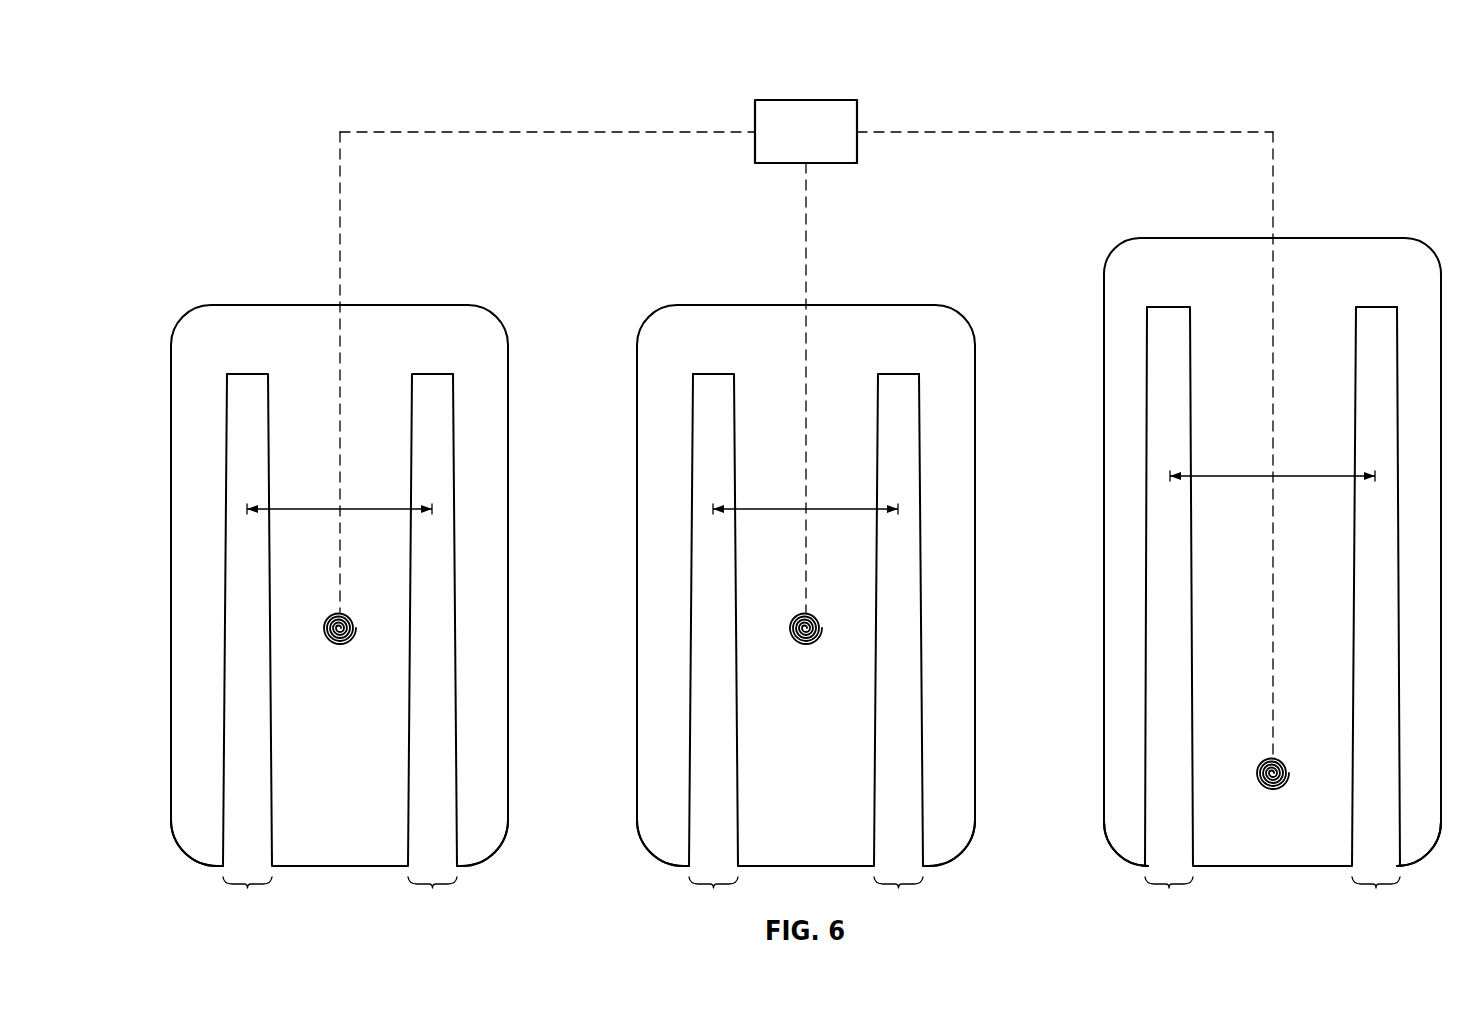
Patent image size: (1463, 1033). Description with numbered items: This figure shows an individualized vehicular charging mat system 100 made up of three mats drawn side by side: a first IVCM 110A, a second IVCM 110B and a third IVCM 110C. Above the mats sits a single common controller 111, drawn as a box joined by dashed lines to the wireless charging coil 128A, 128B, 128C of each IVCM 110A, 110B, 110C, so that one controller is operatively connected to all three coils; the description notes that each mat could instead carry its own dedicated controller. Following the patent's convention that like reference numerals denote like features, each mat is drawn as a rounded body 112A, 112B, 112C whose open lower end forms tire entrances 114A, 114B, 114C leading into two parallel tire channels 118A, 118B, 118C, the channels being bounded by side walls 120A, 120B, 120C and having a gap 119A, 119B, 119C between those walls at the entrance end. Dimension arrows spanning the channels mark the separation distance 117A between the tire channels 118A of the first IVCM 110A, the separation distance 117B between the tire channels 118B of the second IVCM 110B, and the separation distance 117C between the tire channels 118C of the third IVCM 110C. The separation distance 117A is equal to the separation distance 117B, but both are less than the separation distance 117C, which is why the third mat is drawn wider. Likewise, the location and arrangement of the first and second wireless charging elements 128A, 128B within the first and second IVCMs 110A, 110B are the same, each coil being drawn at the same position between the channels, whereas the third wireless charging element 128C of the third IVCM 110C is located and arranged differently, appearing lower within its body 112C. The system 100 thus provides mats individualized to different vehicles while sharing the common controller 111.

The individualized vehicular charging mat system 100 is at (280, 86).
The common controller 111 is at (809, 100).
The first IVCM 110A is at (182, 286).
The housing of first module 112A is at (187, 414).
The distal end of arm of first module 114A is at (248, 843).
The separation distance 117A is at (361, 506).
The tire channels 118A is at (245, 433).
The gap of first module 119A is at (341, 895).
The hinge of first module 120A is at (227, 395).
The wireless charging coil 128A is at (326, 636).
The second IVCM 110B is at (648, 286).
The housing of second module 112B is at (653, 414).
The distal end of arm of second module 114B is at (715, 857).
The separation distance 117B is at (827, 506).
The tire channels 118B is at (711, 433).
The gap of second module 119B is at (807, 895).
The hinge of second module 120B is at (693, 395).
The wireless charging coil 128B is at (792, 636).
The third IVCM 110C is at (1127, 200).
The housing of third module 112C is at (1120, 390).
The distal end of arm of third module 114C is at (1165, 852).
The separation distance 117C is at (1296, 474).
The tire channels 118C is at (1170, 418).
The gap of third module 119C is at (1274, 895).
The hinge of third module 120C is at (1397, 314).
The wireless charging coil 128C is at (1256, 773).